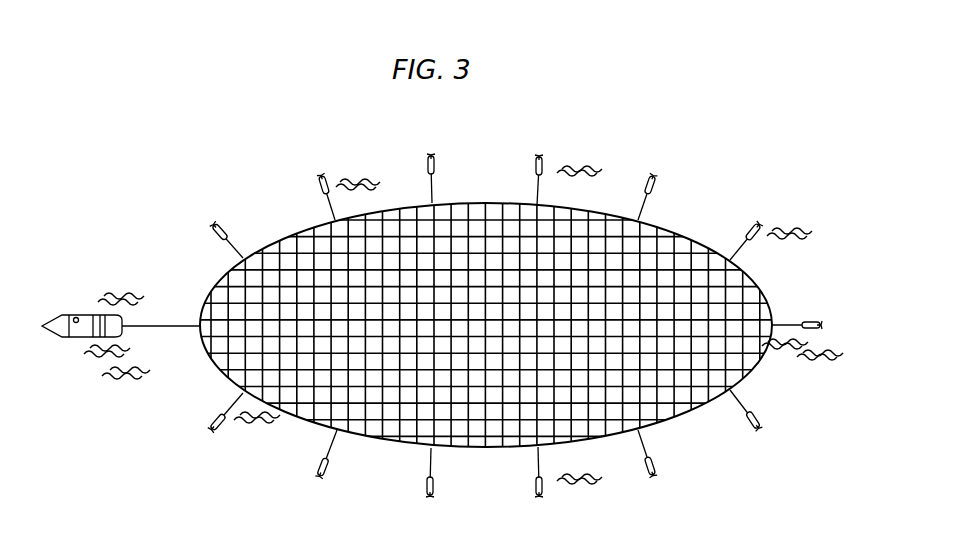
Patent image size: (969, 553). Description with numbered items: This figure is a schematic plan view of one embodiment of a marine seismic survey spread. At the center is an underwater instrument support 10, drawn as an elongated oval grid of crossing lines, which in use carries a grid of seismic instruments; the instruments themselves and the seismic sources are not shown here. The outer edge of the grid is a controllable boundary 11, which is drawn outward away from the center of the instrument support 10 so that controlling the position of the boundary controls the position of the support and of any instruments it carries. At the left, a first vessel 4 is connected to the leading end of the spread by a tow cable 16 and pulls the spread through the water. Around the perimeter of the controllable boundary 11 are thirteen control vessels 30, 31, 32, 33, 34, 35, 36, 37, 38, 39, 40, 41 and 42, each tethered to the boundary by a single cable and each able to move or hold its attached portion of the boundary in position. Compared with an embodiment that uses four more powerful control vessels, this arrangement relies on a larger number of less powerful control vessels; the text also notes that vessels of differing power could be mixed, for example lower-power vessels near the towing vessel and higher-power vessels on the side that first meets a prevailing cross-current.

The first vessel 4 is at (78, 313).
The instrument support 10 is at (490, 326).
The controllable boundary 11 is at (477, 202).
The tow line 16 is at (153, 325).
The control vessel 30 is at (317, 186).
The control vessel 31 is at (426, 163).
The control vessel 32 is at (546, 166).
The control vessel 33 is at (658, 188).
The control vessel 34 is at (750, 230).
The control vessel 35 is at (813, 318).
The control vessel 36 is at (748, 424).
The control vessel 37 is at (660, 466).
The control vessel 38 is at (547, 485).
The control vessel 39 is at (425, 485).
The control vessel 40 is at (316, 466).
The control vessel 41 is at (225, 428).
The control vessel 42 is at (226, 230).